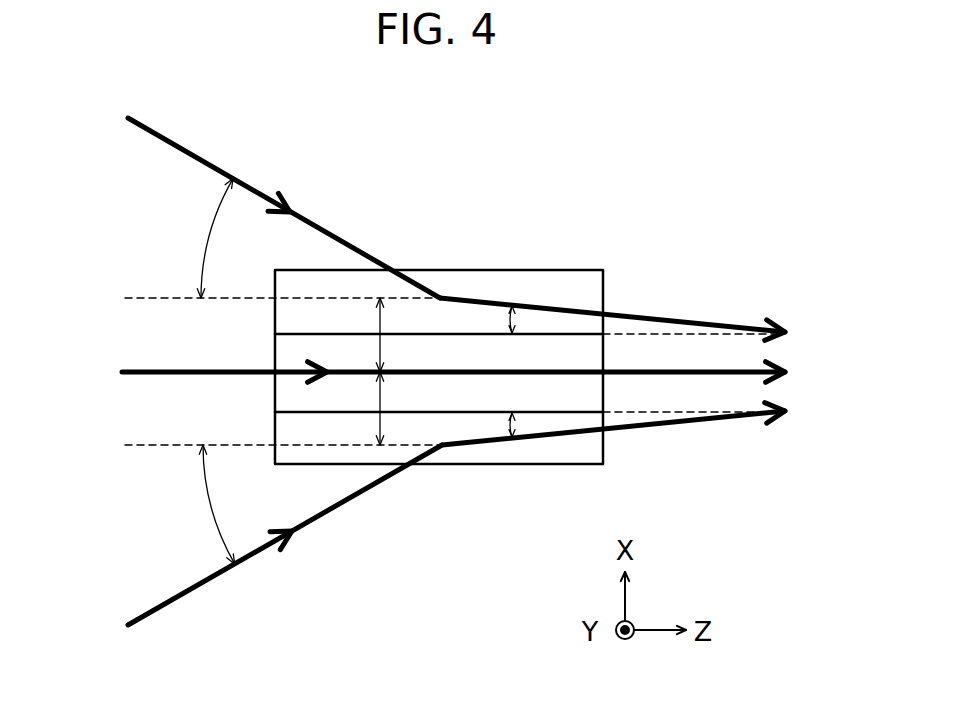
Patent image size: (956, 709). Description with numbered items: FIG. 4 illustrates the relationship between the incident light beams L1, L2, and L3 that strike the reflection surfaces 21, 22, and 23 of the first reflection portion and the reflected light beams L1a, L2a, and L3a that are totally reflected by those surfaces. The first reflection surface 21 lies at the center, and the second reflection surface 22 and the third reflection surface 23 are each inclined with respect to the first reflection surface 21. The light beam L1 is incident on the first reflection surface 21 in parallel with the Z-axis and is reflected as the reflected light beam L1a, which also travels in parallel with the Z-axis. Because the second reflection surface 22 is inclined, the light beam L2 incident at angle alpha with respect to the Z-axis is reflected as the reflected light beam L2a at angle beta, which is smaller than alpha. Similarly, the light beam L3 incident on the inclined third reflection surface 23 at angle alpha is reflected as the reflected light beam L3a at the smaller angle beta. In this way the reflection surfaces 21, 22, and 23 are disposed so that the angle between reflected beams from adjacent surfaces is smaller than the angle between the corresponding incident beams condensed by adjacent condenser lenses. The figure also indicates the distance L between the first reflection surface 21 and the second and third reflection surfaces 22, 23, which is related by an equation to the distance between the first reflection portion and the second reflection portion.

The first reflection surface 21 is at (488, 357).
The second reflection surface 22 is at (437, 283).
The third reflection surface 23 is at (450, 455).
The light beam L1 is at (155, 372).
The light beam L2 is at (205, 163).
The light beam L3 is at (155, 607).
The reflected light beam L1a is at (710, 370).
The reflected light beam L2a is at (640, 313).
The reflected light beam L3a is at (693, 417).
The distance L is at (378, 348).